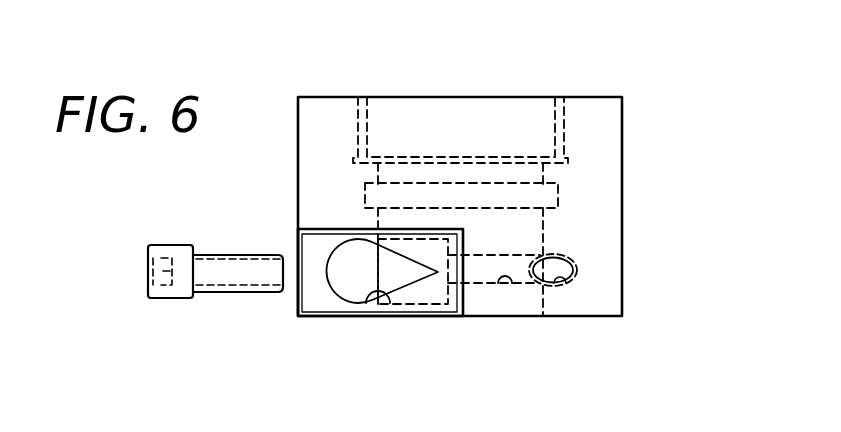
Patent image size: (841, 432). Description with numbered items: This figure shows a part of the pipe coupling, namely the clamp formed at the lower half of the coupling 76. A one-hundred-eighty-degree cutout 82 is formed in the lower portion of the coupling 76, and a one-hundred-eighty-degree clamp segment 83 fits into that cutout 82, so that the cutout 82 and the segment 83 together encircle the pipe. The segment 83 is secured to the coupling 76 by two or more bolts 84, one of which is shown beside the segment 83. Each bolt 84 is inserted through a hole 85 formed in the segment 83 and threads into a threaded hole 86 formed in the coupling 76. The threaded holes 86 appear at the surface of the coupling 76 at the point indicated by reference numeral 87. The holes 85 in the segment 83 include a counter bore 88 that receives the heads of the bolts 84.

The coupling 76 is at (622, 132).
The cutout 82 is at (460, 303).
The clamp segment 83 is at (298, 312).
The bolt 84 is at (184, 236).
The hole 85 is at (447, 285).
The threaded hole 86 is at (508, 290).
The surface point of threaded holes 87 is at (572, 276).
The counter bore 88 is at (352, 307).